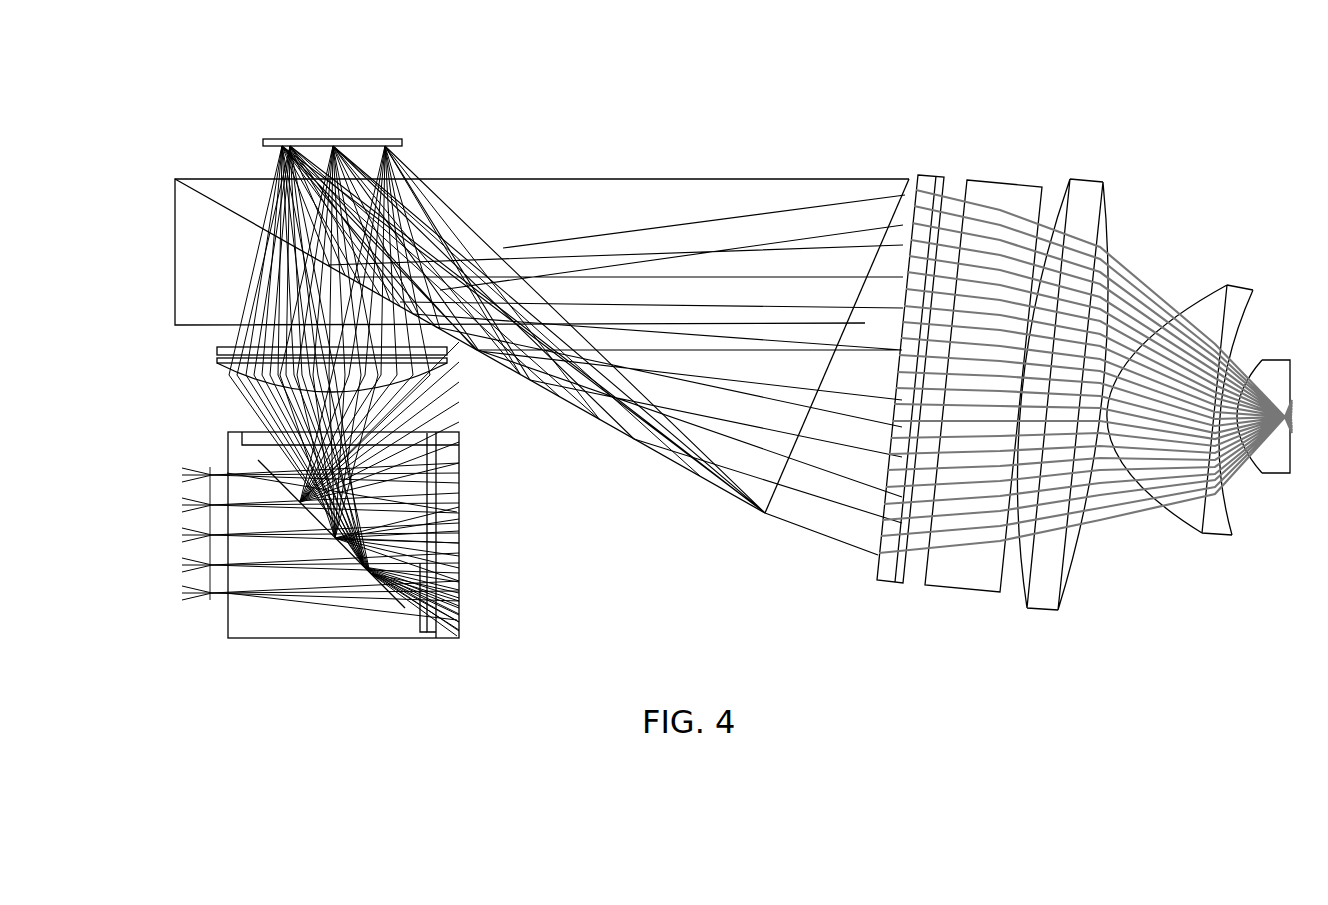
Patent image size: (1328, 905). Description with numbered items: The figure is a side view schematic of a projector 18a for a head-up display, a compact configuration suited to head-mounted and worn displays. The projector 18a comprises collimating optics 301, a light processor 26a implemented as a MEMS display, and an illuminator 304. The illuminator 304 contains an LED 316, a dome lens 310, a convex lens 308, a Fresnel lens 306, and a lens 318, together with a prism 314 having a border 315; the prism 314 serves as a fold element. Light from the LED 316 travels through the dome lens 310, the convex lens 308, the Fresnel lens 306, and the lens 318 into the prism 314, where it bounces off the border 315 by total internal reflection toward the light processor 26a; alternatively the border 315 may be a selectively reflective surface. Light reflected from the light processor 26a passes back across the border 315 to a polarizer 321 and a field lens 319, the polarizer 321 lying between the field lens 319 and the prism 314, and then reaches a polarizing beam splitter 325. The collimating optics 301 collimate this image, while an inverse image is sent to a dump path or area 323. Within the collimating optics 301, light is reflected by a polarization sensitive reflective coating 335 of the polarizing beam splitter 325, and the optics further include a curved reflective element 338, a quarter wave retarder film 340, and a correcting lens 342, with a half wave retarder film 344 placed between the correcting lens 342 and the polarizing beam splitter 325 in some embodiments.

The projector 18a is at (914, 91).
The light processor 26a is at (318, 139).
The collimating optics 301 is at (512, 429).
The illuminator 304 is at (1052, 129).
The Fresnel lens 306 is at (1008, 188).
The convex lens 308 is at (1086, 185).
The dome lens 310 is at (1183, 528).
The prism 314 is at (577, 180).
The border 315 is at (672, 456).
The LED 316 is at (1302, 346).
The lens 318 is at (932, 183).
The field lens 319 is at (224, 368).
The polarizer 321 is at (218, 352).
The dump path or area 323 is at (110, 221).
The polarizing beam splitter 325 is at (290, 638).
The polarization sensitive reflective coating 335 is at (437, 591).
The curved reflective element 338 is at (458, 621).
The quarter wave retarder film 340 is at (437, 487).
The correcting lens 342 is at (212, 548).
The half wave retarder film 344 is at (228, 476).